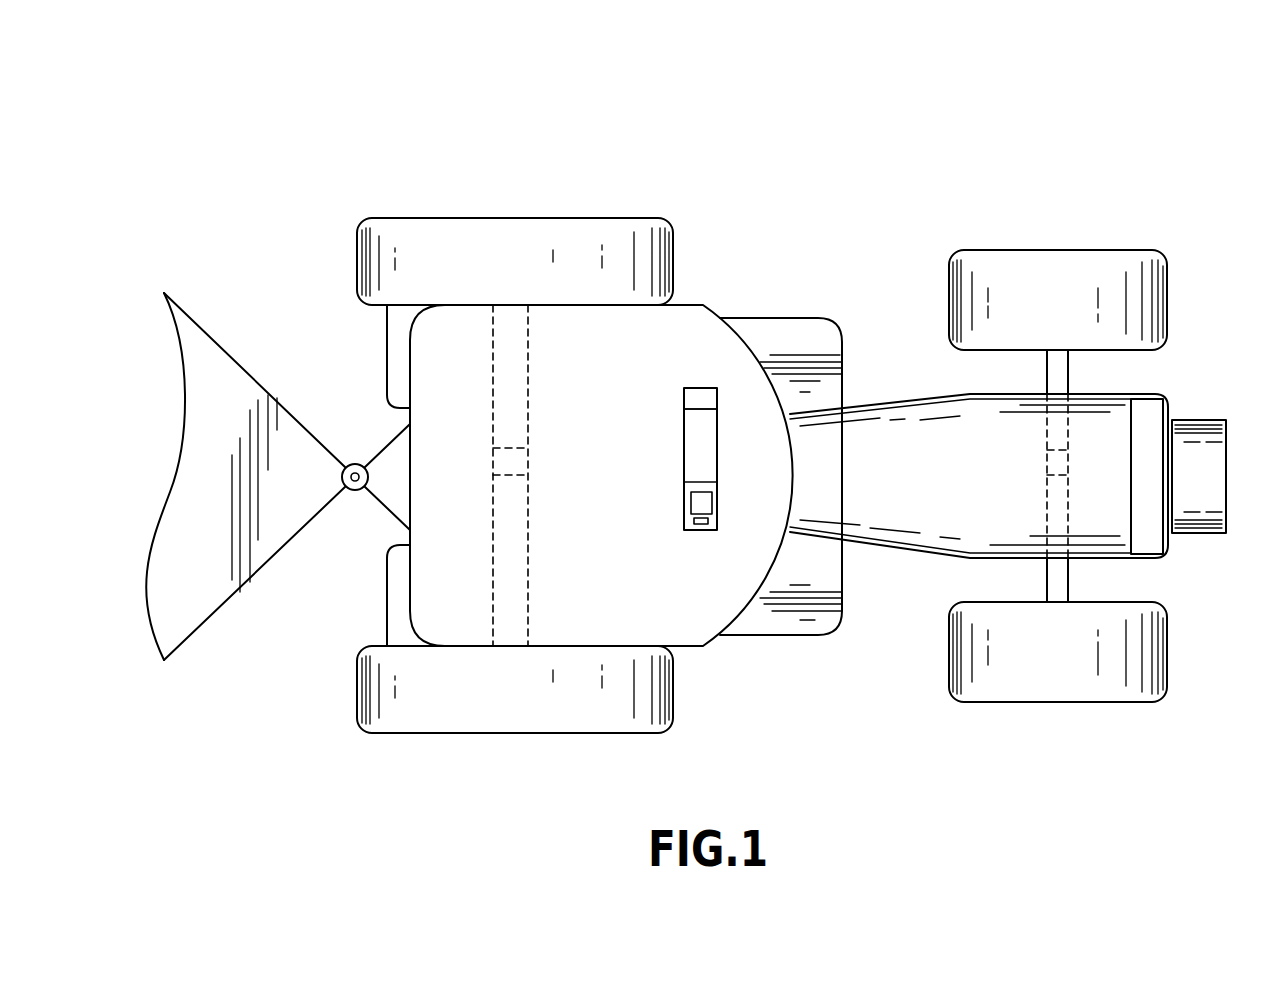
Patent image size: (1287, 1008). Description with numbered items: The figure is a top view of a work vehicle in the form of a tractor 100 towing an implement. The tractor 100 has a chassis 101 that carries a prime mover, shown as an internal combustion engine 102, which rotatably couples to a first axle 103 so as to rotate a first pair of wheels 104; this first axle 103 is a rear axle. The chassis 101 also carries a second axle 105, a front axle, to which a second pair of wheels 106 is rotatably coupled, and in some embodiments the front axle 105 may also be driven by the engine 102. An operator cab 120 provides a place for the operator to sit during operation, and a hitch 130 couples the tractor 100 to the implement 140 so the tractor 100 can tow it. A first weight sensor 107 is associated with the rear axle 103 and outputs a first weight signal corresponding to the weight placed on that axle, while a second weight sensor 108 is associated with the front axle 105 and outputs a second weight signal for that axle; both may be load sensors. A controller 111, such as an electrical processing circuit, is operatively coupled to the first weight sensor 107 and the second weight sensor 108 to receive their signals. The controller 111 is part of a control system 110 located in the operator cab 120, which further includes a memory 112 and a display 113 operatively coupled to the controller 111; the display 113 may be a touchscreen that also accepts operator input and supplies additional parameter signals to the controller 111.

The tractor 100 is at (876, 162).
The chassis 101 is at (913, 397).
The internal combustion engine 102 is at (1168, 410).
The first axle 103 is at (529, 487).
The first pair of wheels 104 is at (545, 240).
The second axle 105 is at (1069, 385).
The second pair of wheels 106 is at (1110, 262).
The first weight sensor 107 is at (529, 449).
The second weight sensor 108 is at (1046, 462).
The control system 110 is at (677, 381).
The controller 111 is at (702, 493).
The memory 112 is at (702, 526).
The display 113 is at (684, 413).
The operator cab 120 is at (704, 300).
The hitch 130 is at (356, 440).
The implement 140 is at (222, 340).